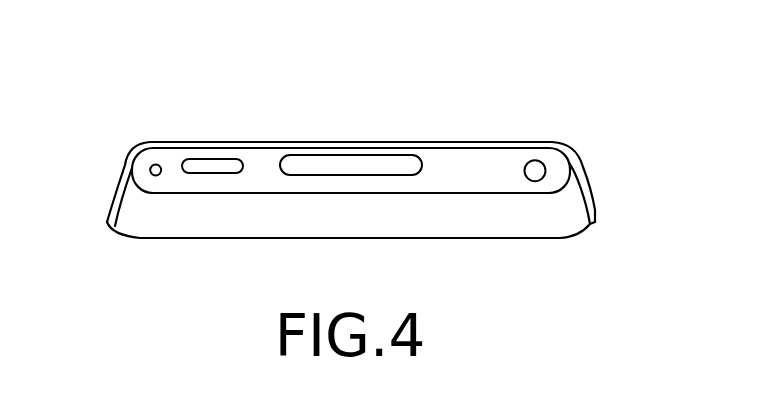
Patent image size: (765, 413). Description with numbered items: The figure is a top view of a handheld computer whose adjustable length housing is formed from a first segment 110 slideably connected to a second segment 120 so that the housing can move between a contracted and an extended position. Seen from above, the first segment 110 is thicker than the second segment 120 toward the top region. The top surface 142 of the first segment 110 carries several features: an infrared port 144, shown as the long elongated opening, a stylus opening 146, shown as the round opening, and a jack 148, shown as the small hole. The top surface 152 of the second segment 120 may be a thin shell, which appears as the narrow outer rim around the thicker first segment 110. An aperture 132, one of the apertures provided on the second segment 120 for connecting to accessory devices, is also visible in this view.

The first segment 110 is at (208, 242).
The second segment 120 is at (123, 155).
The aperture 132 is at (231, 141).
The top surface 142 is at (468, 238).
The infrared port 144 is at (383, 154).
The stylus opening 146 is at (529, 159).
The jack 148 is at (157, 164).
The top surface 152 is at (318, 141).